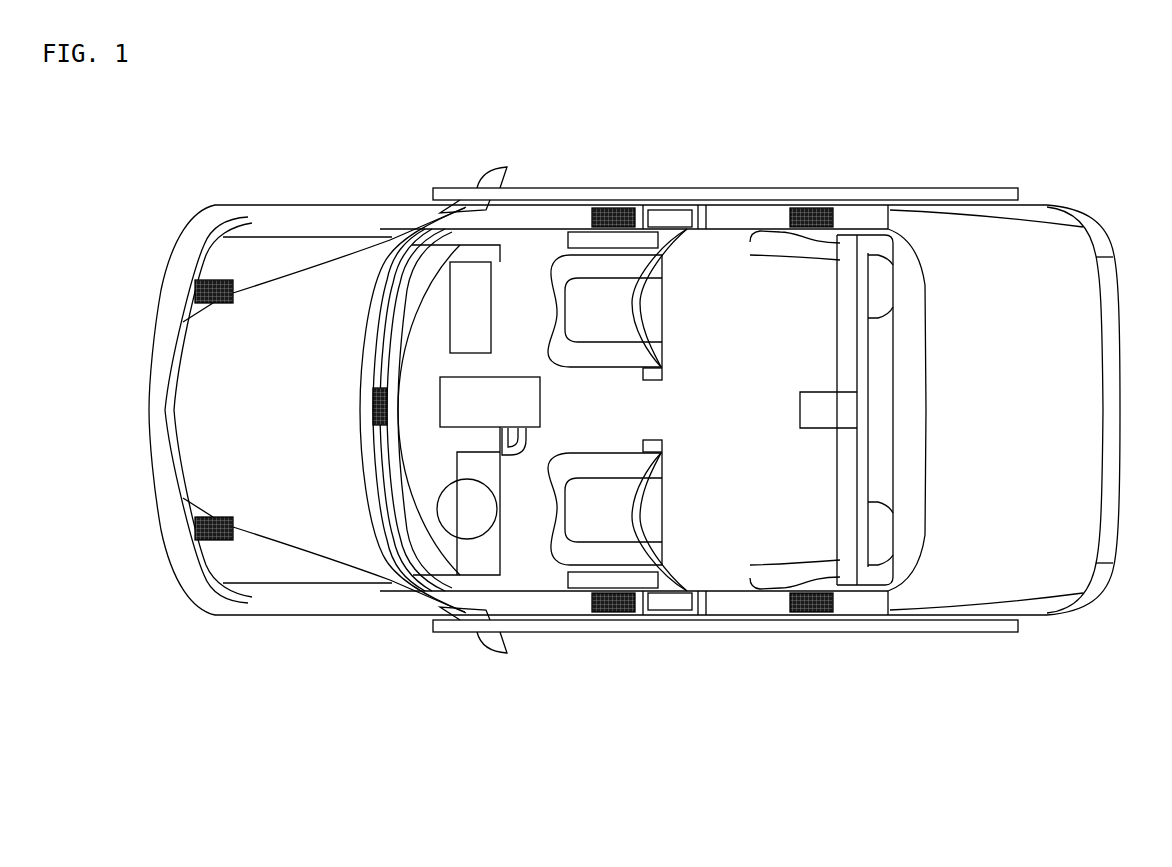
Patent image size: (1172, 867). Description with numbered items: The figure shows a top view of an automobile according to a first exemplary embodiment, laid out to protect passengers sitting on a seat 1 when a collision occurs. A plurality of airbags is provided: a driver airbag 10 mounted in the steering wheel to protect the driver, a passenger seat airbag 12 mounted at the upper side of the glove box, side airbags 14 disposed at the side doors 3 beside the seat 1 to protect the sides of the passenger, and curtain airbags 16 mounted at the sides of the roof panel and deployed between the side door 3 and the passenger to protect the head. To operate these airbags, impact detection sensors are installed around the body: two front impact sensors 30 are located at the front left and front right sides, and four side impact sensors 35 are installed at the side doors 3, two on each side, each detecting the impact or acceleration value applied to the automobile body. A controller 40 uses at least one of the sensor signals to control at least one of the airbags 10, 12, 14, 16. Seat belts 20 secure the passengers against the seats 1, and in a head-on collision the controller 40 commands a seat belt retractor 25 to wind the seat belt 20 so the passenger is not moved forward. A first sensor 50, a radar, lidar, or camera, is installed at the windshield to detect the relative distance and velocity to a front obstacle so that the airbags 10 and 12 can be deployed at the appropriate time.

The seat 1 is at (603, 353).
The side door 3 is at (545, 216).
The driver airbag 10 is at (473, 520).
The passenger seat airbag 12 is at (465, 305).
The side airbag 14 is at (585, 240).
The curtain airbag 16 is at (657, 196).
The seat belt 20 is at (607, 305).
The seat belt retractor 25 is at (673, 215).
The front impact sensor 30 is at (195, 292).
The side impact sensor 35 is at (610, 208).
The controller 40 is at (480, 407).
The first sensor 50 is at (373, 412).